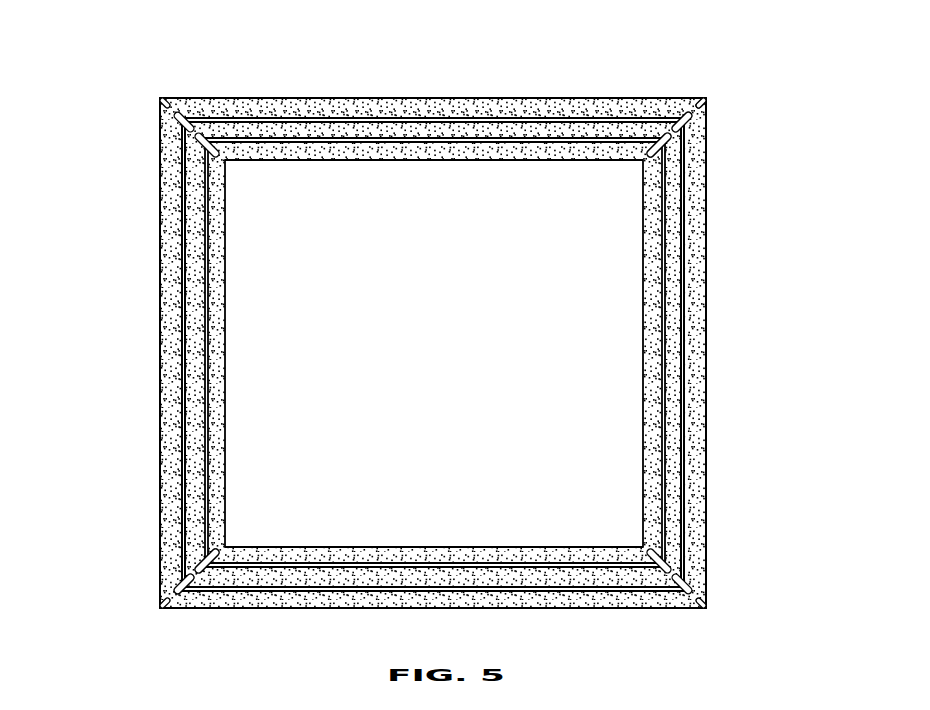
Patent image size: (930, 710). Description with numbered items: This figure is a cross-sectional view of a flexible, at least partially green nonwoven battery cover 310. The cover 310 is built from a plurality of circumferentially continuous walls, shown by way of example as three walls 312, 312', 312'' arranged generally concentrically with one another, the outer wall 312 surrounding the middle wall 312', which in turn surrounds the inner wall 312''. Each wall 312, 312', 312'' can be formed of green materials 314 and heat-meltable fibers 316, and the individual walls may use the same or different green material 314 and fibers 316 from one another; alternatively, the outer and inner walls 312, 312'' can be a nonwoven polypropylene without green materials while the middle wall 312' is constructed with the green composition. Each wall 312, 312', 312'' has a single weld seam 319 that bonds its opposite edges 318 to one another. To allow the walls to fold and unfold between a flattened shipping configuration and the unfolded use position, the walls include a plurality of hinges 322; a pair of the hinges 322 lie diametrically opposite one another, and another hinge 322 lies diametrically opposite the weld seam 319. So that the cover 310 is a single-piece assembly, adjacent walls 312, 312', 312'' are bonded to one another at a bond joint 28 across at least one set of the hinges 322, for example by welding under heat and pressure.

The cover 310 is at (90, 237).
The wall 312 is at (474, 353).
The wall 312' is at (480, 354).
The wall 312'' is at (492, 352).
The green materials 314 is at (696, 422).
The heat-meltable fibers 316 is at (692, 492).
The opposite edges 318 is at (698, 106).
The weld seam 319 is at (703, 105).
The hinges 322 is at (157, 97).
The bond joint 28 is at (208, 583).